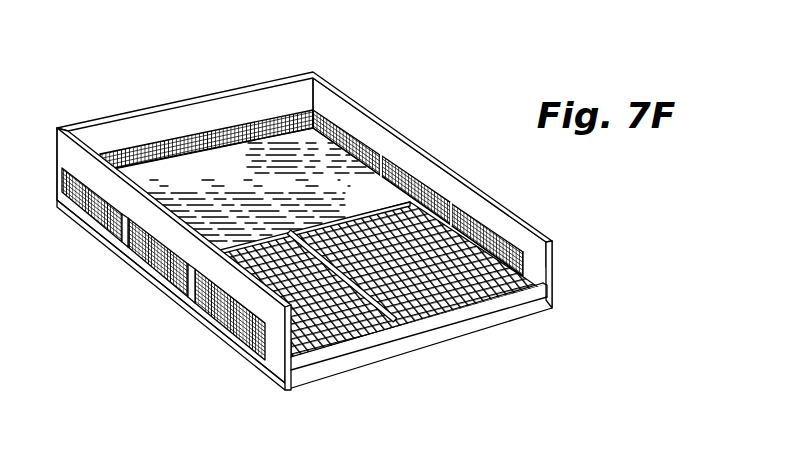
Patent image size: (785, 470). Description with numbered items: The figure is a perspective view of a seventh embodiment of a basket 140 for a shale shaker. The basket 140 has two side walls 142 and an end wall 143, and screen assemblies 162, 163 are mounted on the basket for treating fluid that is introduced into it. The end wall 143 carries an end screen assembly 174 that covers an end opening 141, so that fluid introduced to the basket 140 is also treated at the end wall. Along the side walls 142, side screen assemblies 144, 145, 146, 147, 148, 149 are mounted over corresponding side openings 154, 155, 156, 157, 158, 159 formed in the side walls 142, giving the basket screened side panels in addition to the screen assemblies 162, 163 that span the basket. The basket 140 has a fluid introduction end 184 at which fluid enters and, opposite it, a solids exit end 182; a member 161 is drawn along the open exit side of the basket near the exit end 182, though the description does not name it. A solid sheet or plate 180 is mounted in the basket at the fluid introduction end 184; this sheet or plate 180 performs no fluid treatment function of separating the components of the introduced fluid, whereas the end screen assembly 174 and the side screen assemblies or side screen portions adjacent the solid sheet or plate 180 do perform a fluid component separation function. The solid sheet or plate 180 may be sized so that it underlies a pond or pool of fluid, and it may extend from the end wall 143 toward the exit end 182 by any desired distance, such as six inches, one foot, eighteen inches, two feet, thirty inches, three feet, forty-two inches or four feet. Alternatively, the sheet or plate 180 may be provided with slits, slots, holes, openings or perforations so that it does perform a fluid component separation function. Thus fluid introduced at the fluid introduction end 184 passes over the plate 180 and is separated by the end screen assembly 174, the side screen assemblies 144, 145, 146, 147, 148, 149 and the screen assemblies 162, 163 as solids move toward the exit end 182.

The basket 140 is at (178, 314).
The end opening 141 is at (265, 187).
The side walls 142 is at (535, 255).
The end wall 143 is at (100, 137).
The side screen assembly 144 is at (103, 220).
The side screen assembly 145 is at (132, 250).
The side screen assembly 146 is at (233, 330).
The side screen assembly 147 is at (333, 132).
The side screen assembly 148 is at (400, 175).
The side screen assembly 149 is at (485, 235).
The side opening 154 is at (92, 218).
The side opening 155 is at (150, 262).
The side opening 156 is at (207, 313).
The side opening 157 is at (371, 182).
The side opening 158 is at (465, 206).
The side opening 159 is at (505, 250).
The front rail 161 is at (460, 320).
The screen assembly 162 is at (337, 333).
The screen assembly 163 is at (435, 283).
The end screen assembly 174 is at (172, 155).
The solid sheet or plate 180 is at (254, 133).
The exit end 182 is at (503, 297).
The fluid introduction end 184 is at (153, 172).